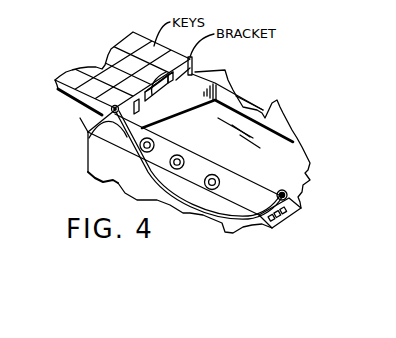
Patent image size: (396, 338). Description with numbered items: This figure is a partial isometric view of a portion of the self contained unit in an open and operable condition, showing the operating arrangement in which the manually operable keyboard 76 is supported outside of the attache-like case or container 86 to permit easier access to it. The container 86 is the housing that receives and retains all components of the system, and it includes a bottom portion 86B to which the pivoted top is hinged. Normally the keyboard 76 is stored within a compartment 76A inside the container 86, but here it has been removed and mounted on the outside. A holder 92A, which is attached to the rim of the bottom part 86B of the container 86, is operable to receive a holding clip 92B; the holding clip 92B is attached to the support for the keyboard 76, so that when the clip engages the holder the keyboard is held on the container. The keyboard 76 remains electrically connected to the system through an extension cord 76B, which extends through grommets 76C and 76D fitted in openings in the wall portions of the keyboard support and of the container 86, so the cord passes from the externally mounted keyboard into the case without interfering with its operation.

The keyboard 76 is at (101, 68).
The compartment 76A is at (258, 132).
The extension cord 76B is at (97, 142).
The grommet 76C is at (100, 113).
The grommet 76D is at (300, 200).
The attache-like case 86 is at (300, 140).
The bottom portion 86B is at (126, 172).
The holder 92A is at (130, 141).
The holding clip 92B is at (193, 62).